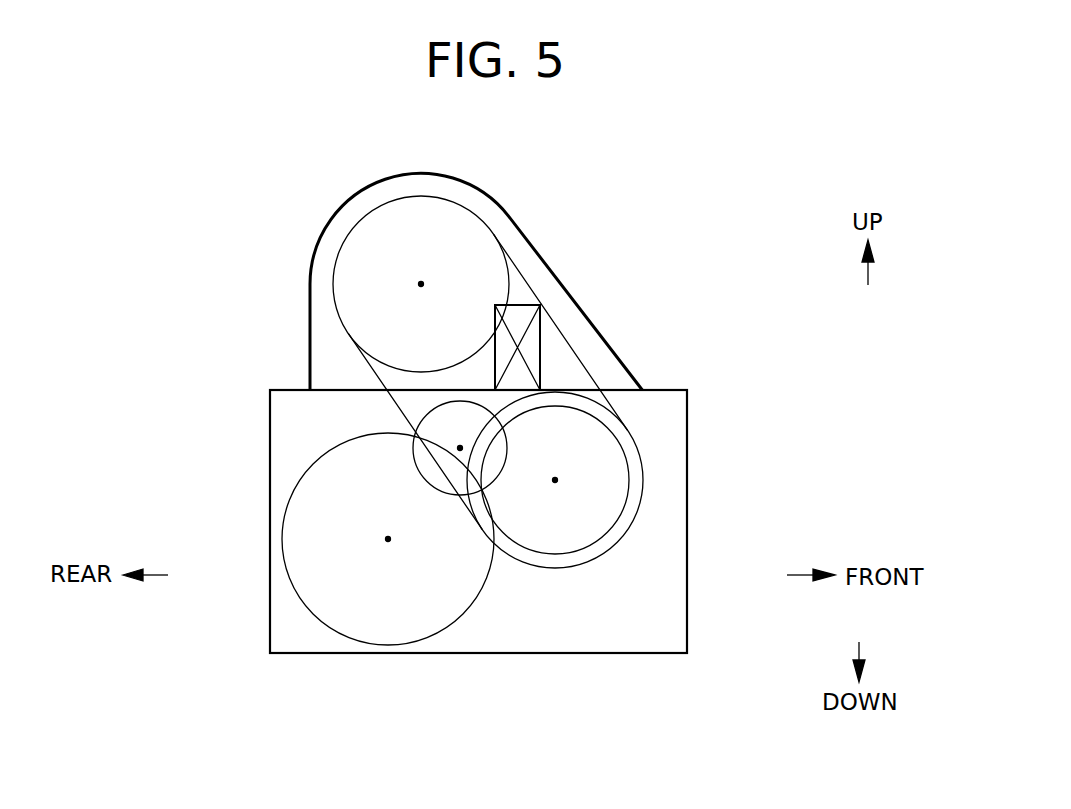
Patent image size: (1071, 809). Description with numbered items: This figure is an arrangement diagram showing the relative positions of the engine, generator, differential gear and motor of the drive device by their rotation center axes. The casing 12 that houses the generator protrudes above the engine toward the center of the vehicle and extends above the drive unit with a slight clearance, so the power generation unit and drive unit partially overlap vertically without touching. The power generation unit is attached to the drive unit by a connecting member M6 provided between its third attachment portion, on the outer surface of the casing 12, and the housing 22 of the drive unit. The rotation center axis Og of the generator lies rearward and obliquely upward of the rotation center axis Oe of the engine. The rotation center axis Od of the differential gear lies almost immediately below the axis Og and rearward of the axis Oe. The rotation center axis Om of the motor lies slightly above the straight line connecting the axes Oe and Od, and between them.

The casing 12 is at (341, 208).
The housing 22 is at (670, 390).
The rotation center axis of the generator Og is at (421, 284).
The connecting member M6 is at (541, 343).
The rotation center axis of the motor Om is at (460, 446).
The rotation center axis of the engine Oe is at (555, 480).
The rotation center axis of the differential gear Od is at (388, 541).